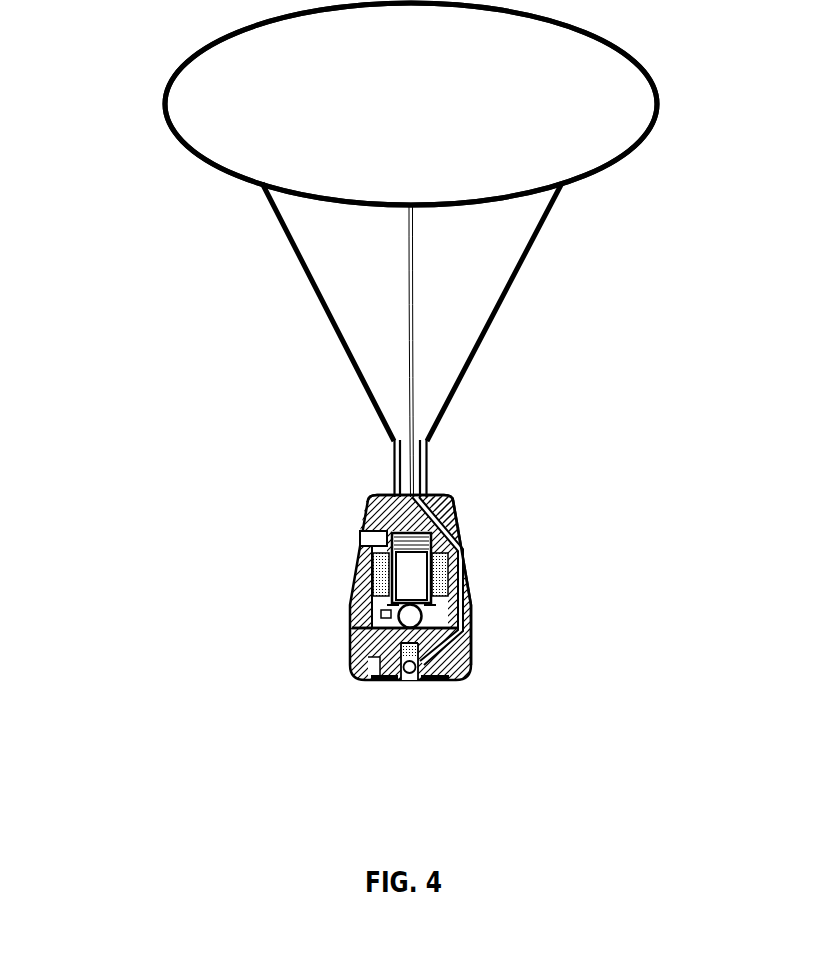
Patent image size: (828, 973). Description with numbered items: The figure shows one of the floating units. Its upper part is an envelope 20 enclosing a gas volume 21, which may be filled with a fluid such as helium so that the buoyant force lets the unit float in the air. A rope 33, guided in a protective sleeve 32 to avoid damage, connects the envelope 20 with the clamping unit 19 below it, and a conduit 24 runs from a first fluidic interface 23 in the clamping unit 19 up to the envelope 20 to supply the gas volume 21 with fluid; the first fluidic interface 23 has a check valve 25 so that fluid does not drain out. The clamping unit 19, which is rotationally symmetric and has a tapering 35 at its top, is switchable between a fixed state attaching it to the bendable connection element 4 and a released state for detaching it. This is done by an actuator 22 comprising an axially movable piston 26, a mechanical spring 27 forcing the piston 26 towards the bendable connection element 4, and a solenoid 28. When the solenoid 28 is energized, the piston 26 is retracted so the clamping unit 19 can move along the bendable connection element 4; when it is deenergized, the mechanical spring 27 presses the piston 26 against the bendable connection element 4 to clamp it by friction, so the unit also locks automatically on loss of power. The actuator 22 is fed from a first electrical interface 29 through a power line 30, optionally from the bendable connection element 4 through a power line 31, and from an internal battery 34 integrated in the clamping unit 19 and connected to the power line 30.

The envelope 20 is at (243, 101).
The gas volume 21 is at (417, 113).
The rope 33 is at (273, 225).
The protective sleeve 32 is at (390, 458).
The conduit 24 is at (402, 313).
The actuator 22 is at (478, 636).
The tapering 35 is at (367, 507).
The internal battery 34 is at (363, 538).
The piston 26 is at (375, 575).
The mechanical spring 27 is at (447, 567).
The power line 30 is at (403, 568).
The solenoid 28 is at (448, 590).
The power line 31 is at (383, 613).
The bendable connection element 4 is at (373, 635).
The first fluidic interface 23 is at (410, 685).
The first electrical interface 29 is at (380, 682).
The check valve 25 is at (437, 682).
The clamping unit 19 is at (473, 617).